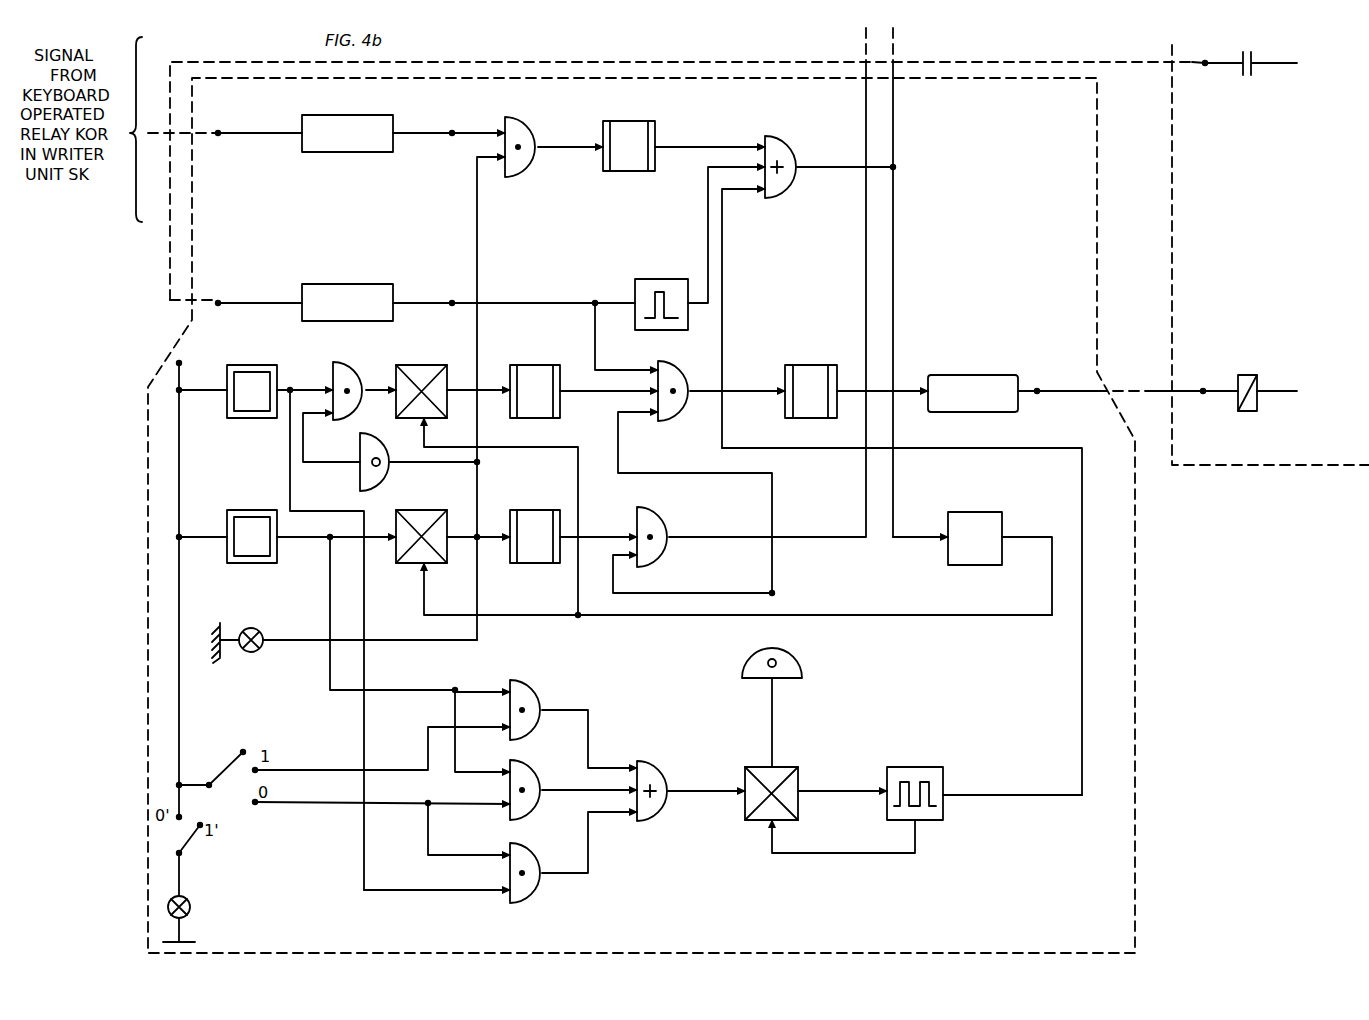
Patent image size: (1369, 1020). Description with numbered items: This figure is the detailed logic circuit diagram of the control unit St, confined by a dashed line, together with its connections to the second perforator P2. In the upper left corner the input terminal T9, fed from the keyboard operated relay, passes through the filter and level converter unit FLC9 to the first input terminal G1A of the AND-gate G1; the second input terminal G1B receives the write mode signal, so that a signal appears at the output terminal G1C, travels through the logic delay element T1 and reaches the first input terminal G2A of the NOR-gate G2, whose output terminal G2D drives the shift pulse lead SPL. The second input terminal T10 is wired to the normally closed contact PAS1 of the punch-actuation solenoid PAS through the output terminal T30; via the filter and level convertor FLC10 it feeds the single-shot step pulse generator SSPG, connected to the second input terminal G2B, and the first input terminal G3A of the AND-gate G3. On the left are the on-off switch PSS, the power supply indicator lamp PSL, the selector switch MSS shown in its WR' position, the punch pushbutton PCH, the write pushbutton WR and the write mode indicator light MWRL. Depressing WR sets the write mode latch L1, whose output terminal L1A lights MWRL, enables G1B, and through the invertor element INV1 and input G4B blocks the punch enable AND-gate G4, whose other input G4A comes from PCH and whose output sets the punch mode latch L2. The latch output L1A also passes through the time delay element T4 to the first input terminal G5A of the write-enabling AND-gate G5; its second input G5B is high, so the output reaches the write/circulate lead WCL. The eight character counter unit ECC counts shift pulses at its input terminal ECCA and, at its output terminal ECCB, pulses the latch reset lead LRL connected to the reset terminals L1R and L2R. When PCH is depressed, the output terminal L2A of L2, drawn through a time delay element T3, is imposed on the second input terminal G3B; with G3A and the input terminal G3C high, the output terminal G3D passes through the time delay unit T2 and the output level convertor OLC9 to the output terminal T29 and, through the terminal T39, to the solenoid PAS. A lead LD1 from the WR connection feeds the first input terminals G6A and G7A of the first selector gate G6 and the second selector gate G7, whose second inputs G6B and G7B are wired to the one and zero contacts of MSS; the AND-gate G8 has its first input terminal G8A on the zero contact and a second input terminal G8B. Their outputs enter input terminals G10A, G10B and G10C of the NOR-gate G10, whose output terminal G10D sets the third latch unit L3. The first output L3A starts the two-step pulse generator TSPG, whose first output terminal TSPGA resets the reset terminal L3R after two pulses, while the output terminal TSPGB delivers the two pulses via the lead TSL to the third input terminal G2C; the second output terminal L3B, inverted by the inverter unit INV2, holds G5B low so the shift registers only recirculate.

The input terminal T9 is at (187, 121).
The input terminal T10 is at (218, 291).
The filter and level converter unit FLC9 is at (305, 133).
The filter and level convertor FLC10 is at (305, 302).
The AND-gate G1 is at (518, 134).
The first input terminal G1A is at (449, 122).
The second input terminal G1B is at (481, 389).
The output terminal G1C is at (568, 166).
The logic delay element T1 is at (629, 134).
The NOR-gate G2 is at (790, 138).
The first input terminal G2A is at (710, 137).
The second input terminal G2B is at (726, 225).
The third input terminal G2C is at (739, 308).
The output terminal G2D is at (840, 172).
The single-shot step pulse generator SSPG is at (661, 293).
The write/circulate lead WCL is at (866, 48).
The shift pulse lead SPL is at (897, 52).
The output terminal T30 is at (1200, 53).
The normally closed contact PAS1 is at (1251, 52).
The punch operation pushbutton PCH is at (228, 378).
The punch enable AND-gate G4 is at (347, 382).
The input terminal G4A is at (305, 379).
The input terminal G4B is at (327, 427).
The invertor element INV1 is at (411, 454).
The punch mode latch L2 is at (406, 379).
The output terminal L2A is at (478, 380).
The reset terminal L2R is at (501, 516).
The time delay element T3 is at (535, 380).
The AND-gate G3 is at (679, 385).
The first input terminal G3A is at (626, 336).
The second input terminal G3B is at (609, 382).
The input terminal G3C is at (686, 493).
The output terminal G3D is at (745, 396).
The time delay unit T2 is at (811, 379).
The output level convertor OLC9 is at (927, 393).
The output terminal T29 is at (1057, 381).
The input terminal T39 is at (1195, 381).
The punch-actuation solenoid PAS is at (1263, 381).
The second perforator P2 is at (1293, 468).
The control unit St is at (148, 643).
The write operation pushbutton WR is at (228, 525).
The write mode latch L1 is at (362, 525).
The output terminal L1A is at (478, 528).
The latch reset terminal L1R is at (738, 590).
The latch reset lead LRL is at (880, 613).
The time delay element T4 is at (535, 525).
The write-enabling AND-gate G5 is at (658, 529).
The first input terminal G5A is at (598, 525).
The second input terminal G5B is at (684, 566).
The eight character counter unit ECC is at (975, 526).
The input terminal ECCA is at (920, 526).
The output terminal ECCB is at (1027, 565).
The write mode of operation indicator light MWRL is at (344, 634).
The lead LD1 is at (394, 615).
The selector switch MSS is at (211, 768).
The WR' position WR' is at (252, 763).
The on-off switch PSS is at (196, 827).
The power supply indicator lamp PSL is at (196, 897).
The first selector gate G6 is at (528, 701).
The first input terminal G6A is at (482, 681).
The second input terminal G6B is at (382, 738).
The second selector gate G7 is at (529, 784).
The first input terminal G7A is at (482, 732).
The second input terminal G7B is at (382, 795).
The AND-gate G8 is at (528, 867).
The first input terminal G8A is at (469, 829).
The second input terminal G8B is at (437, 879).
The NOR-gate G10 is at (657, 780).
The input terminal G10A is at (589, 739).
The input terminal G10B is at (589, 780).
The input terminal G10C is at (589, 831).
The output terminal G10D is at (706, 780).
The inverter unit INV2 is at (791, 658).
The third latch unit L3 is at (784, 765).
The first output L3A is at (842, 780).
The second output terminal L3B is at (750, 722).
The reset terminal L3R is at (843, 836).
The two-step pulse generator TSPG is at (890, 765).
The first output terminal TSPGA is at (954, 839).
The output terminal TSPGB is at (1012, 783).
The lead TSL is at (1082, 698).